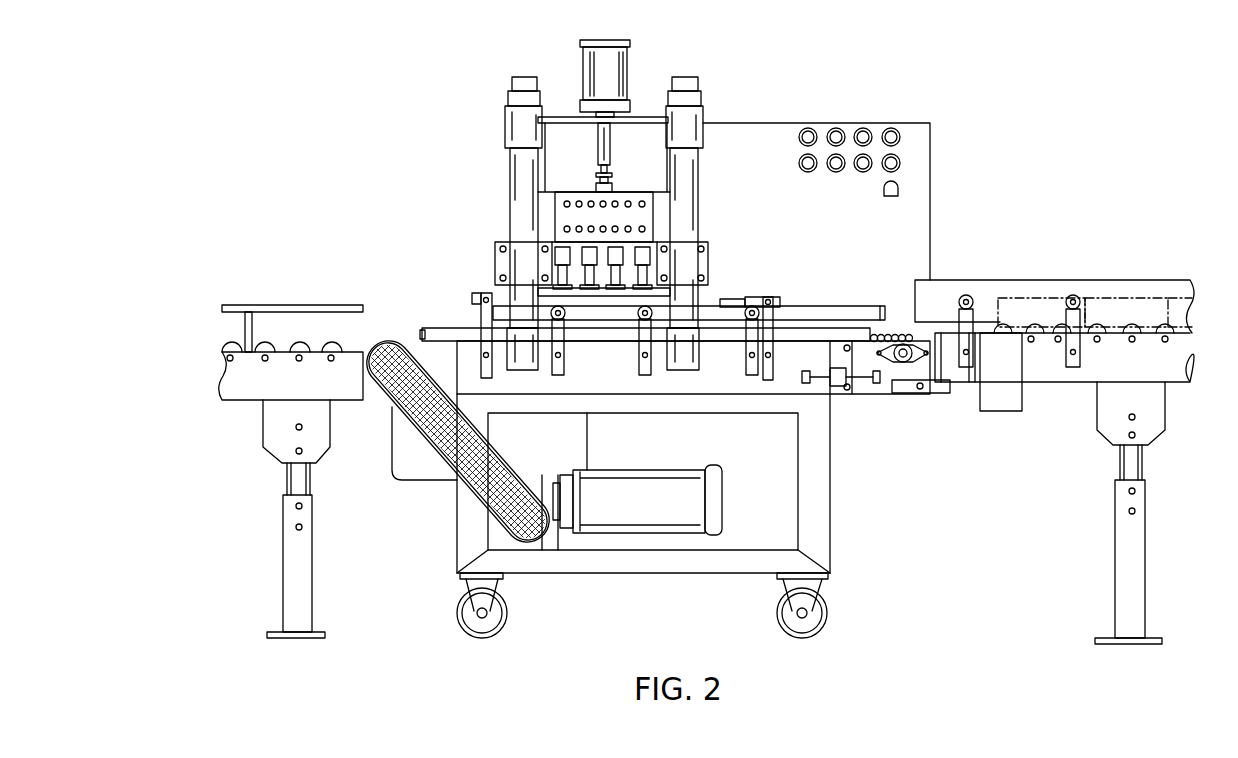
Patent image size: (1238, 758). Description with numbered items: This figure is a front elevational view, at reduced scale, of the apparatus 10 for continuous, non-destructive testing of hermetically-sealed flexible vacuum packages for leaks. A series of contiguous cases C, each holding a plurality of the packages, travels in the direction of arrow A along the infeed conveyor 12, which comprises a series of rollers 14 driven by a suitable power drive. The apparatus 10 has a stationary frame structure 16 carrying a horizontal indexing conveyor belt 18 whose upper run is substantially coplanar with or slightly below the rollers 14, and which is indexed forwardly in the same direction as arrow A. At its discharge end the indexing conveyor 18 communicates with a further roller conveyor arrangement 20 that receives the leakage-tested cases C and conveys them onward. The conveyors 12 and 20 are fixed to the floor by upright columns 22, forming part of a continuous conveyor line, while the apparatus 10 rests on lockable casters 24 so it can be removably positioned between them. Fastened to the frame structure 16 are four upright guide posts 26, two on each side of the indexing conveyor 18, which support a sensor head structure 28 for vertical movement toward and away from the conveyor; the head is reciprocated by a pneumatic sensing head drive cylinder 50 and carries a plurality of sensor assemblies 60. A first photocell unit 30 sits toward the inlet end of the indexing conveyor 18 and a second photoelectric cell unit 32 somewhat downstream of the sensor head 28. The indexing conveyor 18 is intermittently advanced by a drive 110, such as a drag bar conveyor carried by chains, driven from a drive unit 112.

The apparatus 10 is at (740, 99).
The infeed conveyor 12 is at (1050, 383).
The rollers 14 is at (1140, 327).
The frame structure 16 is at (832, 492).
The indexing conveyor belt 18 is at (887, 330).
The roller conveyor arrangement 20 is at (212, 354).
The upright columns 22 is at (313, 576).
The lockable casters 24 is at (457, 619).
The upright guide posts 26 is at (510, 183).
The sensor head structure 28 is at (632, 184).
The first photocell unit 30 is at (738, 298).
The second photoelectric cell unit 32 is at (540, 287).
The pneumatic sensing head drive cylinder 50 is at (630, 58).
The sensor assemblies 60 is at (655, 272).
The drive 110 is at (432, 452).
The drive unit 112 is at (695, 470).
The cases C is at (1018, 298).
The arrow A is at (1206, 316).